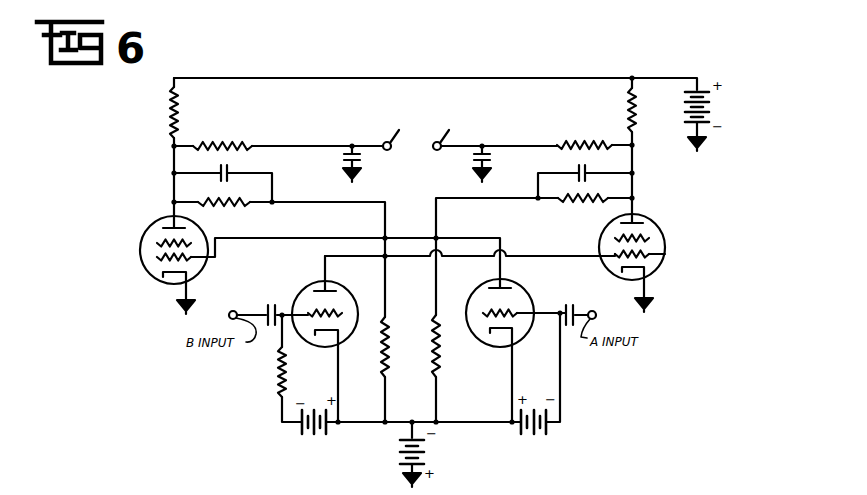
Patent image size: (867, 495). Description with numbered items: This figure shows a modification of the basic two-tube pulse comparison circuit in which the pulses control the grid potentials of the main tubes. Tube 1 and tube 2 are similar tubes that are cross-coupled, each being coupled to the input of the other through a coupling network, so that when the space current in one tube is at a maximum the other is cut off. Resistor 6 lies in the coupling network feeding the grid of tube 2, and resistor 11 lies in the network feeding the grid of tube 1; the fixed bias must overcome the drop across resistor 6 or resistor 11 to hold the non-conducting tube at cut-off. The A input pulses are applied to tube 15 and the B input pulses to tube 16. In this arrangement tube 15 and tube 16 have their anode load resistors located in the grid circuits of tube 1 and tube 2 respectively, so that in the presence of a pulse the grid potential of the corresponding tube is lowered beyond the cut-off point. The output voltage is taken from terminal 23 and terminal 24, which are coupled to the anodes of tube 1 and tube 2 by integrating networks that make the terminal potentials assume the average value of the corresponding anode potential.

The tube 1 is at (140, 240).
The tube 2 is at (665, 254).
The resistor 6 is at (389, 349).
The resistor 11 is at (441, 356).
The tube 15 is at (520, 293).
The tube 16 is at (351, 293).
The terminal 23 is at (396, 132).
The terminal 24 is at (442, 131).